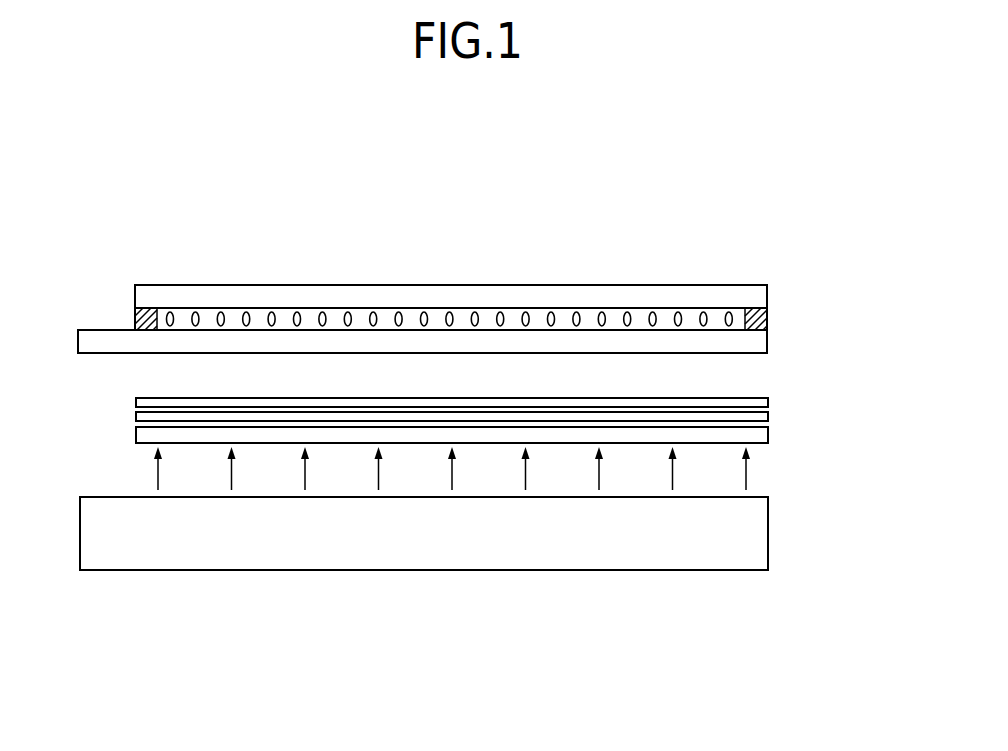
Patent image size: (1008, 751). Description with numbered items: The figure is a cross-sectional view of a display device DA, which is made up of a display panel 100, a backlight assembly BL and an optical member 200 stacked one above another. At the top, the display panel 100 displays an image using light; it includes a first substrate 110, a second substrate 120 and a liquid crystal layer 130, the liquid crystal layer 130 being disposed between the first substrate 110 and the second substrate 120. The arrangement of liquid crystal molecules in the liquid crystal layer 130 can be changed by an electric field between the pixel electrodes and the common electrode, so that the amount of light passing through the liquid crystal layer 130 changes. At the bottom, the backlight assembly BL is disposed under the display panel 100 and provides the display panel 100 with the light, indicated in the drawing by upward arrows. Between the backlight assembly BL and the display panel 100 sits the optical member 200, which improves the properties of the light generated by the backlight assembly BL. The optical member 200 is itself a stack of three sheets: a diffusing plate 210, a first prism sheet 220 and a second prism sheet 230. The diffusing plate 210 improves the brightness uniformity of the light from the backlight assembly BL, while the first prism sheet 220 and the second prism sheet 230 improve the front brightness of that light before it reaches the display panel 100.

The display panel 100 is at (422, 263).
The first substrate 110 is at (537, 203).
The second substrate 120 is at (553, 293).
The liquid crystal layer 130 is at (615, 316).
The optical member 200 is at (527, 416).
The diffusing plate 210 is at (768, 431).
The first prism sheet 220 is at (768, 416).
The second prism sheet 230 is at (768, 402).
The backlight assembly BL is at (663, 560).
The display device DA is at (60, 297).